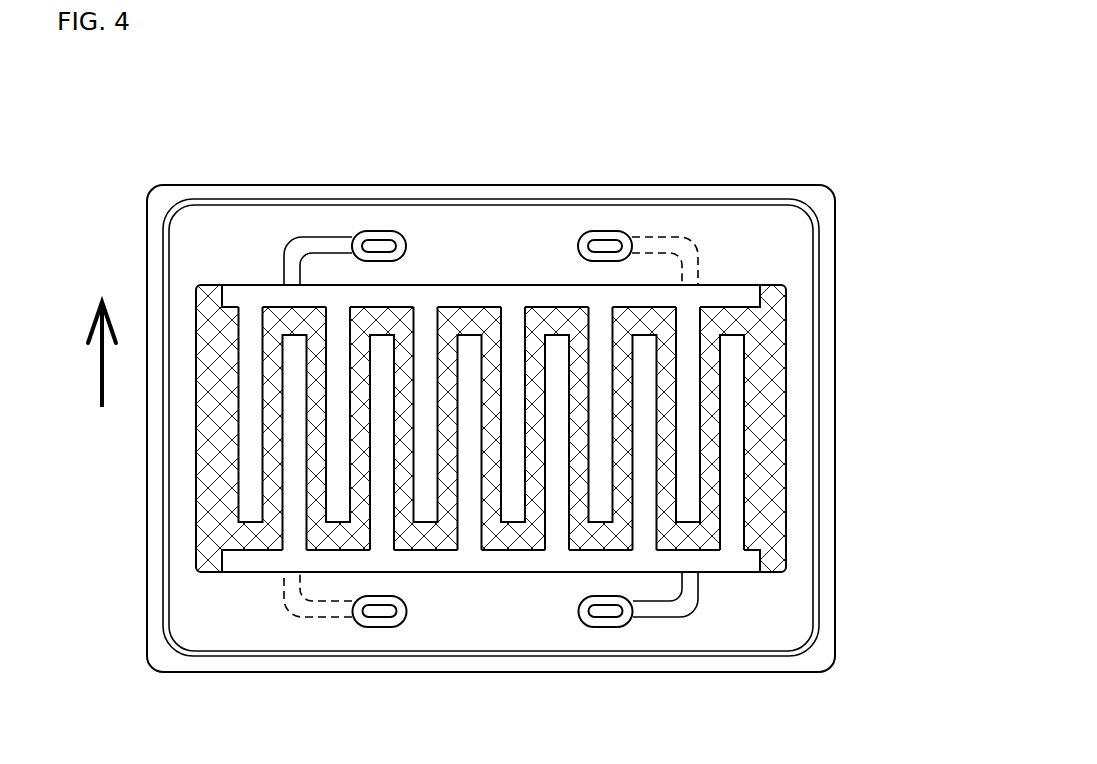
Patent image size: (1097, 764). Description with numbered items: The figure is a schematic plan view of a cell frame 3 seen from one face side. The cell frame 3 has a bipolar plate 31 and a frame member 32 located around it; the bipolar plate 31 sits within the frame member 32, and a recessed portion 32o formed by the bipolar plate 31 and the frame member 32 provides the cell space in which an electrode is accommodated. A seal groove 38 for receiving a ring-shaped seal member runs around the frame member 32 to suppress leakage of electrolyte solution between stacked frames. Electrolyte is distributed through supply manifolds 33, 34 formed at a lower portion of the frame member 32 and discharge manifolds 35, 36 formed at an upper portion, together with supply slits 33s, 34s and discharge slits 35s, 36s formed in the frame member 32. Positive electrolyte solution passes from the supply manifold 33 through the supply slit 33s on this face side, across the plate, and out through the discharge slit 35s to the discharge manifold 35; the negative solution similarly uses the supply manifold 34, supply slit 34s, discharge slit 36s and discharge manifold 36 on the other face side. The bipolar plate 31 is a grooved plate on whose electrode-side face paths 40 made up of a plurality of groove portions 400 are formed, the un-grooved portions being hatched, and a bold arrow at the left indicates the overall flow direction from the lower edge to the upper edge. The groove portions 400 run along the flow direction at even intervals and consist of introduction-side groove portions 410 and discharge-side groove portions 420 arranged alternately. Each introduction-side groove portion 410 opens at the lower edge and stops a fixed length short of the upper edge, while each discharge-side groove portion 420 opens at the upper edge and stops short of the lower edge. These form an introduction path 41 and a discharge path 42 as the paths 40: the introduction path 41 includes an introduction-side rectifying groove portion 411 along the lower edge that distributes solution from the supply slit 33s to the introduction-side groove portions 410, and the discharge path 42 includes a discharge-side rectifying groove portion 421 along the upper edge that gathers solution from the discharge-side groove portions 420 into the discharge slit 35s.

The cell frame 3 is at (140, 217).
The bipolar plate 31 is at (480, 317).
The frame member 32 is at (188, 183).
The recessed portion 32o is at (778, 344).
The supply manifold 33 is at (610, 612).
The supply slit 33s is at (652, 612).
The supply manifold 34 is at (378, 612).
The supply slit 34s is at (300, 613).
The discharge manifold 35 is at (375, 243).
The discharge slit 35s is at (313, 245).
The discharge manifold 36 is at (610, 243).
The discharge slit 36s is at (677, 237).
The seal groove 38 is at (170, 495).
The path 40 is at (582, 431).
The introduction path 41 is at (748, 462).
The discharge path 42 is at (703, 426).
The groove portion 400 is at (582, 431).
The introduction-side groove portion 410 is at (735, 520).
The introduction-side rectifying groove portion 411 is at (530, 562).
The discharge-side groove portion 420 is at (687, 333).
The discharge-side rectifying groove portion 421 is at (555, 293).